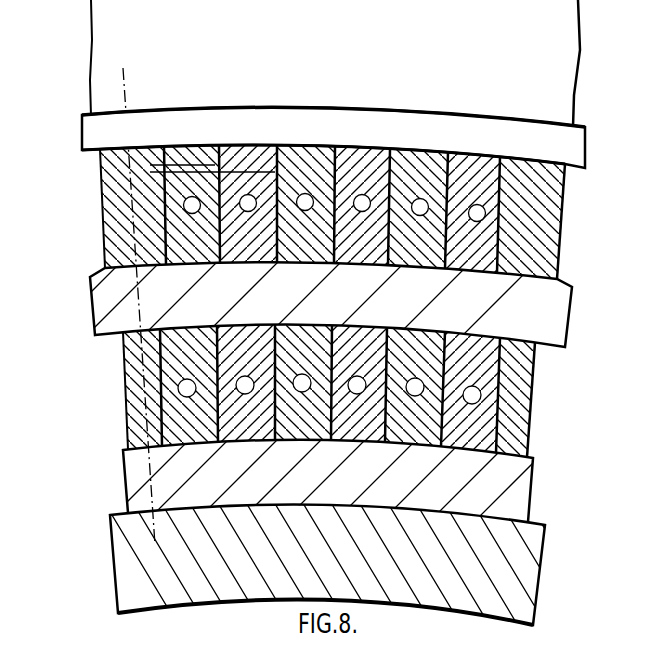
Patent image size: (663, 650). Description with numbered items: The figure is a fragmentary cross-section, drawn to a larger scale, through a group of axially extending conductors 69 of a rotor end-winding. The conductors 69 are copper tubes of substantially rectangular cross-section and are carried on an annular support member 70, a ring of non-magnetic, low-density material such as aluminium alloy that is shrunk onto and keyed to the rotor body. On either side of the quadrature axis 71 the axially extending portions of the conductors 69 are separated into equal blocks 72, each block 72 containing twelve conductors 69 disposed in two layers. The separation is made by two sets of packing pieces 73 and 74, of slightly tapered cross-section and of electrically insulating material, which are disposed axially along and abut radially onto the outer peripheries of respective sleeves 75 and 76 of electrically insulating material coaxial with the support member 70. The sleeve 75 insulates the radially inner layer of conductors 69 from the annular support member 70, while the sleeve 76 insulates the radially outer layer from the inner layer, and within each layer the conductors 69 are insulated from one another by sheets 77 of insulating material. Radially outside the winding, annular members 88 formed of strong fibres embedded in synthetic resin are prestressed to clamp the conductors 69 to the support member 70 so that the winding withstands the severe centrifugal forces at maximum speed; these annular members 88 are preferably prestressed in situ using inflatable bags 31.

The inflatable bag 31 is at (82, 131).
The conductor 69 is at (435, 193).
The annular support member 70 is at (122, 553).
The quadrature axis 71 is at (123, 89).
The block 72 is at (160, 103).
The packing piece 73 is at (137, 417).
The packing piece 74 is at (112, 217).
The sleeve 75 is at (128, 475).
The sleeve 76 is at (98, 305).
The sheet of insulating material 77 is at (275, 172).
The annular member 88 is at (91, 30).